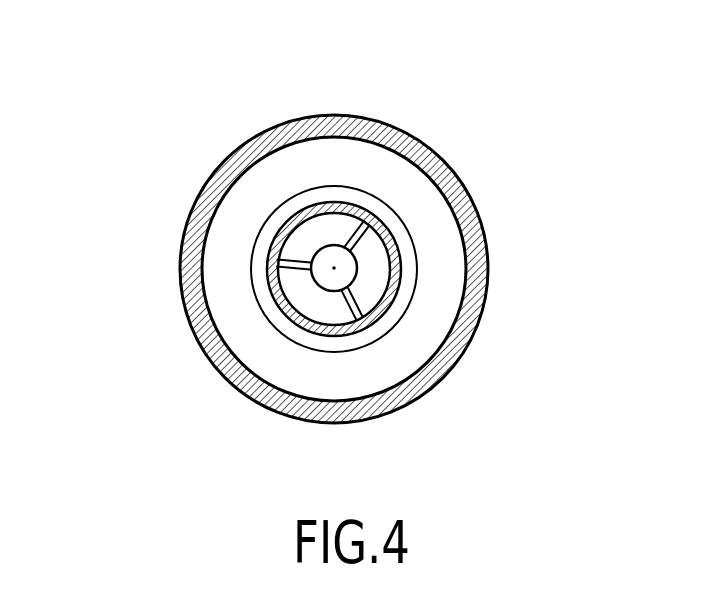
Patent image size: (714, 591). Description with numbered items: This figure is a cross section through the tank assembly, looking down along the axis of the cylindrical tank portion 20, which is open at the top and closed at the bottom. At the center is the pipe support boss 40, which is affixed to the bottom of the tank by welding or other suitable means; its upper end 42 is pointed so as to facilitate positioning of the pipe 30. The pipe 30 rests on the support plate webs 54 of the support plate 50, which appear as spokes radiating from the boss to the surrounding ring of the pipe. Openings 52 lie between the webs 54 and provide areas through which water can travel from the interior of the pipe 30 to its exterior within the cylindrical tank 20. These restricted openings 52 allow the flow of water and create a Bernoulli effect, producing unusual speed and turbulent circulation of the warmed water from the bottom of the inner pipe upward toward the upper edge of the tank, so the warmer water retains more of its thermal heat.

The cylindrical tank portion 20 is at (367, 117).
The pipe 30 is at (327, 200).
The pipe support boss 40 is at (327, 287).
The upper end 42 is at (334, 268).
The support plate 50 is at (388, 207).
The openings 52 is at (303, 240).
The support plate webs 54 is at (288, 264).